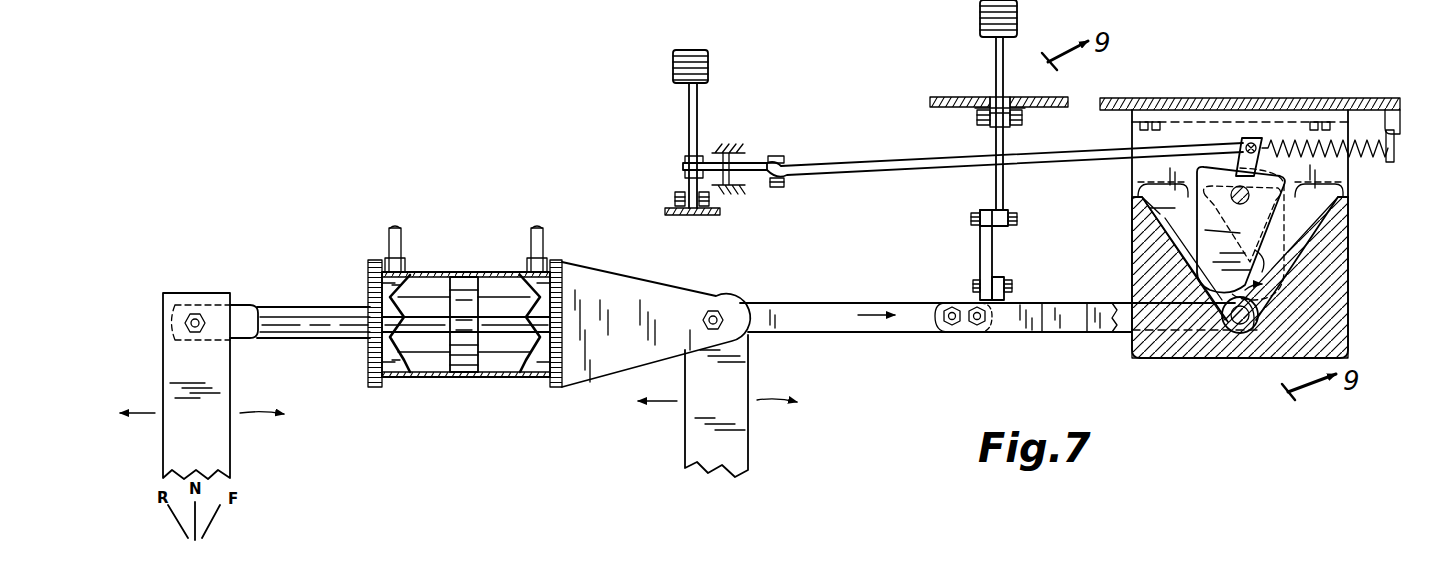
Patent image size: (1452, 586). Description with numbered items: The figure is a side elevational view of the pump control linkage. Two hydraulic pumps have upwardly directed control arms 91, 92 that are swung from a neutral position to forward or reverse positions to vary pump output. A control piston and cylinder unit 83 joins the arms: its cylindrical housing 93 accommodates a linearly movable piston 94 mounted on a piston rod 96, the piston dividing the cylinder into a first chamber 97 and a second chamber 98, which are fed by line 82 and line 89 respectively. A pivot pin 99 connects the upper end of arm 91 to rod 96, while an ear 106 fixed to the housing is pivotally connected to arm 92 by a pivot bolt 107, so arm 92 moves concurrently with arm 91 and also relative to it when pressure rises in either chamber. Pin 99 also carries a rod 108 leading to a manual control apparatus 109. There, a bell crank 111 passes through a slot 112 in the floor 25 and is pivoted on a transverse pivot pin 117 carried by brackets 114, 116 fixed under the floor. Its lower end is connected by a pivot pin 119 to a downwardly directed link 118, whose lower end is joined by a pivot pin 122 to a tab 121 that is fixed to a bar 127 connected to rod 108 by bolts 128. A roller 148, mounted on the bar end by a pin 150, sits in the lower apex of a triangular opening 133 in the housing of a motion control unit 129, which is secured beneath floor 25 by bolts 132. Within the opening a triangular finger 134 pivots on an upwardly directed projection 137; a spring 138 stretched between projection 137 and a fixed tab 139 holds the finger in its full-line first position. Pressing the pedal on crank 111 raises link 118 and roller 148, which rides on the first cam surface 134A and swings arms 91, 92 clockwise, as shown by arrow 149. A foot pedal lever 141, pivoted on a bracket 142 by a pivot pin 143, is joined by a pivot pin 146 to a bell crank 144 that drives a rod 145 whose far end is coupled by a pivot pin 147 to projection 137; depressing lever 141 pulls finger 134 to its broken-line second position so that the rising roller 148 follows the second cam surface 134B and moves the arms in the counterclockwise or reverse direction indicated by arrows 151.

The floor 25 is at (968, 97).
The line 82 is at (396, 236).
The control piston and cylinder unit 83 is at (443, 296).
The line 89 is at (543, 246).
The control arm 91 is at (180, 368).
The control arm 92 is at (735, 453).
The cylindrical housing 93 is at (486, 378).
The piston 94 is at (468, 356).
The piston rod 96 is at (322, 332).
The first chamber 97 is at (426, 278).
The second chamber 98 is at (497, 278).
The pivot pin 99 is at (188, 323).
The ear 106 is at (647, 300).
The pivot bolt 107 is at (718, 313).
The rod 108 is at (300, 300).
The manual control apparatus 109 is at (882, 62).
The bell crank 111 is at (996, 58).
The slot 112 is at (1008, 100).
The bracket 114 is at (988, 124).
The bracket 116 is at (1014, 125).
The transverse pivot pin 117 is at (976, 116).
The link 118 is at (993, 242).
The pivot pin 119 is at (1017, 219).
The tab 121 is at (1004, 296).
The pivot pin 122 is at (1012, 283).
The bar 127 is at (1034, 328).
The bolts 128 is at (972, 326).
The motion control unit 129 is at (1353, 172).
The bolts 132 is at (1186, 96).
The triangular opening 133 is at (1158, 209).
The finger 134 is at (1241, 230).
The first cam surface 134A is at (1286, 200).
The second cam surface 134B is at (1165, 228).
The projection 137 is at (1252, 136).
The spring 138 is at (1352, 150).
The fixed tab 139 is at (1388, 107).
The foot pedal lever 141 is at (690, 104).
The bracket 142 is at (686, 186).
The pivot pin 143 is at (712, 201).
The bell crank 144 is at (742, 163).
The rod 145 is at (880, 166).
The pivot pin 146 is at (782, 157).
The pivot pin 147 is at (1245, 142).
The roller 148 is at (1259, 320).
The arrow 149 is at (262, 408).
The pin 150 is at (1239, 333).
The arrows 151 is at (120, 413).